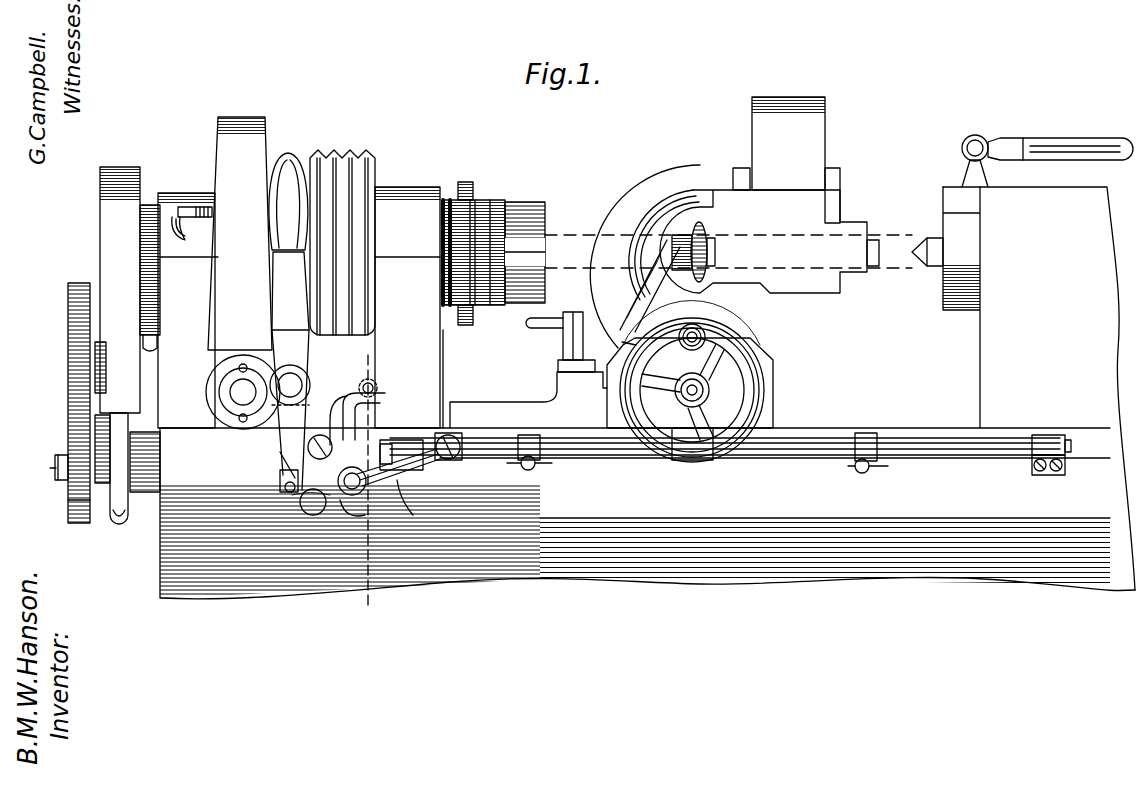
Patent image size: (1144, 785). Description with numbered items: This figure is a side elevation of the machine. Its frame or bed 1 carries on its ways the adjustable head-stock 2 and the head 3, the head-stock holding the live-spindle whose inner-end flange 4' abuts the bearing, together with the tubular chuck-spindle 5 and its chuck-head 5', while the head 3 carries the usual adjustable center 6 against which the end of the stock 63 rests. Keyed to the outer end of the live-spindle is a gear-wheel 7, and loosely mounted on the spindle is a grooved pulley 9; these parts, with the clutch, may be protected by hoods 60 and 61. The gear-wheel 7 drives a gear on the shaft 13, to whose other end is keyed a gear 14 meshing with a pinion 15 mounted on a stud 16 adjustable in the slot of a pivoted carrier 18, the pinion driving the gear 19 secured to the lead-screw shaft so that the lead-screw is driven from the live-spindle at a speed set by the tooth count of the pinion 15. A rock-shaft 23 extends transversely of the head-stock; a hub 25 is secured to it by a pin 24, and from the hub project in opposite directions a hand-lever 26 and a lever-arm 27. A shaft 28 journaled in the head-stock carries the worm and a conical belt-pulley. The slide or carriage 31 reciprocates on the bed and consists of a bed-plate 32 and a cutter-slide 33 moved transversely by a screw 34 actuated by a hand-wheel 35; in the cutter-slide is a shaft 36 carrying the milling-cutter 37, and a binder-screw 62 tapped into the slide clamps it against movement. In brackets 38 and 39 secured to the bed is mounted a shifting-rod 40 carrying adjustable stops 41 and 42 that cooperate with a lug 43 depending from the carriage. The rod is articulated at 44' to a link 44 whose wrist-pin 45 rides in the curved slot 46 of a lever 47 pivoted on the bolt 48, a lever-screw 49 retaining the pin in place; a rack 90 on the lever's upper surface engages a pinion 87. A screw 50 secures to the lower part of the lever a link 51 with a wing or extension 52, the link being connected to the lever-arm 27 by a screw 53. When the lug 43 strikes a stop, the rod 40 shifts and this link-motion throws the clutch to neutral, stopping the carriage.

The frame or bed 1 is at (647, 513).
The head-stock 2 is at (300, 307).
The head 3 is at (1039, 362).
The flange 4' is at (470, 241).
The tubular chuck-spindle 5 is at (487, 235).
The chuck-head 5' is at (525, 237).
The adjustable center 6 is at (932, 242).
The gear-wheel 7 is at (365, 483).
The grooved pulley 9 is at (342, 228).
The shaft 13 is at (101, 358).
The gear 14 is at (68, 311).
The pinion 15 is at (63, 446).
The stud 16 is at (55, 470).
The pivoted carrier 18 is at (117, 512).
The gear 19 is at (79, 526).
The rock-shaft 23 is at (298, 380).
The pin 24 is at (289, 321).
The hub 25 is at (303, 388).
The hand-lever 26 is at (280, 318).
The lever-arm 27 is at (289, 415).
The shaft 28 is at (240, 390).
The slide or carriage 31 is at (763, 210).
The bed-plate 32 is at (770, 392).
The cutter-slide 33 is at (770, 368).
The screw 34 is at (685, 378).
The hand-wheel 35 is at (752, 400).
The shaft 36 is at (714, 252).
The milling-cutter 37 is at (706, 241).
The bracket 38 is at (422, 468).
The bracket 39 is at (1045, 440).
The shifting-rod 40 is at (790, 458).
The adjustable stop 41 is at (540, 462).
The adjustable stop 42 is at (867, 435).
The lug 43 is at (697, 460).
The link 44 is at (402, 481).
The articulation point 44' is at (469, 414).
The wrist-pin 45 is at (358, 493).
The curved slot 46 is at (360, 437).
The lever 47 is at (378, 410).
The bolt 48 is at (320, 436).
The lever-screw 49 is at (412, 501).
The screw 50 is at (316, 511).
The link 51 is at (281, 490).
The wing or extension 52 is at (288, 492).
The screw 53 is at (283, 478).
The hood 60 is at (124, 197).
The hood 61 is at (240, 233).
The binder-screw 62 is at (565, 348).
The stock 63 is at (883, 270).
The pinion 87 is at (377, 382).
The rack 90 is at (374, 393).